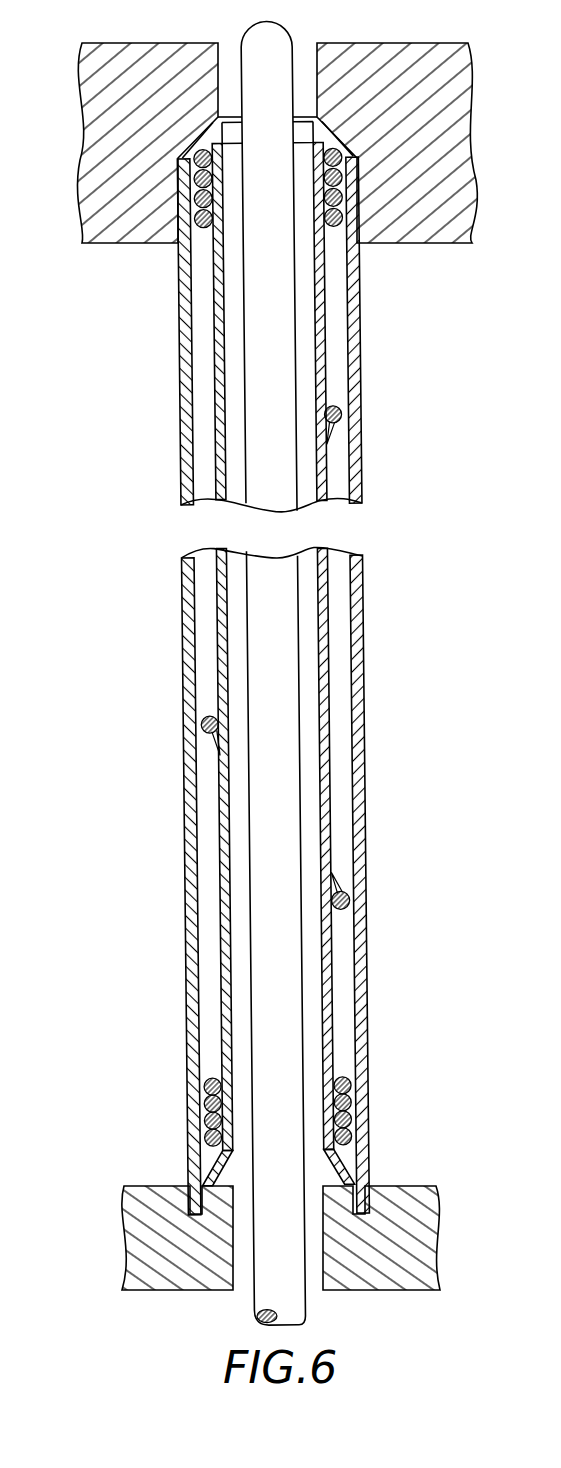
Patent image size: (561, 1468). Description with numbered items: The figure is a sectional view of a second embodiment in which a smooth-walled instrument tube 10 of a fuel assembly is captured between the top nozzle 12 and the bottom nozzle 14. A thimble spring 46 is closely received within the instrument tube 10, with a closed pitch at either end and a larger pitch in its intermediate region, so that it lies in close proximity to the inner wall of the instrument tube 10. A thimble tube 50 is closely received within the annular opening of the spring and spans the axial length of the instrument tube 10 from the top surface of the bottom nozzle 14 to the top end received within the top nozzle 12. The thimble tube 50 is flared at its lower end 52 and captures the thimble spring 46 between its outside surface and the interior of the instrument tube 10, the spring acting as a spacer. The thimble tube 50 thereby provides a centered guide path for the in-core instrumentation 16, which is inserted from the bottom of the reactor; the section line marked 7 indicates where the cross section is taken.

The instrument tube 10 is at (362, 632).
The top nozzle 12 is at (422, 245).
The bottom nozzle 14 is at (405, 1183).
The in-core instrumentation 16 is at (253, 963).
The thimble spring 46 is at (353, 1080).
The thimble tube 50 is at (330, 695).
The flared lower end 52 is at (222, 1152).
The section line 7- 7 is at (177, 799).